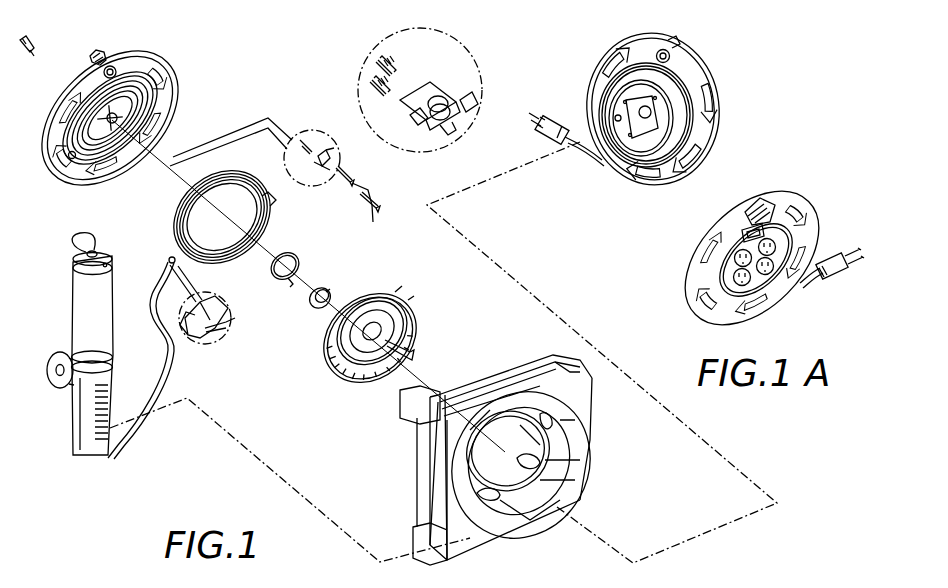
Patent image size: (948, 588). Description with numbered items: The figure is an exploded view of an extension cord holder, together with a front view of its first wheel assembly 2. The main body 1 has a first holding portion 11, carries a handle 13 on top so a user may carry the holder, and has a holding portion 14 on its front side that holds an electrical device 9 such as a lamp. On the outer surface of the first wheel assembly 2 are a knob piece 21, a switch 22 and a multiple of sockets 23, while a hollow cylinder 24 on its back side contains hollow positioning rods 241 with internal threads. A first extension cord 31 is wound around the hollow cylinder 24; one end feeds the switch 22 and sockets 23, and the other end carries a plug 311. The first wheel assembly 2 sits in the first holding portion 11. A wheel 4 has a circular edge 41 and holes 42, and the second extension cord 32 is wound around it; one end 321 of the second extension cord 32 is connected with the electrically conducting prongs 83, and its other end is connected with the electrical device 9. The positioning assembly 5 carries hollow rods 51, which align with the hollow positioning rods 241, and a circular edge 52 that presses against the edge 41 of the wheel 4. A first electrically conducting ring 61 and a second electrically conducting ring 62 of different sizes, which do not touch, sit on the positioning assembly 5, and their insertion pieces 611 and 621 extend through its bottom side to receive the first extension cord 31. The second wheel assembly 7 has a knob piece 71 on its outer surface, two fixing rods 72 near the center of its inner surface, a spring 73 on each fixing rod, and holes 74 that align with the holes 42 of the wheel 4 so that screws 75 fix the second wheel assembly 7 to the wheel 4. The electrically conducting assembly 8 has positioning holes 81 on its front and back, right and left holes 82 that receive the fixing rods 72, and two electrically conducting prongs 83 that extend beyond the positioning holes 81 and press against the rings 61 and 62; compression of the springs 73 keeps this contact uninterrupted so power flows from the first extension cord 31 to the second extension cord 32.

In FIG. 1, the main body 1 is at (484, 364).
In FIG. 1, the first holding portion 11 is at (542, 523).
In FIG. 1, the handle 13 is at (560, 372).
In FIG. 1, the holding portion 14 is at (410, 420).
In FIG. 1, the first wheel assembly 2 is at (602, 45).
In FIG. 1A, the first wheel assembly 2 is at (820, 183).
In FIG. 1, the knob piece 21 is at (676, 44).
In FIG. 1A, the knob piece 21 is at (764, 205).
In FIG. 1A, the switch 22 is at (742, 246).
In FIG. 1A, the sockets 23 is at (770, 282).
In FIG. 1, the hollow cylinder 24 is at (610, 80).
In FIG. 1A, the hollow cylinder 24 is at (722, 236).
In FIG. 1, the hollow positioning rods 241 is at (613, 118).
In FIG. 1, the first extension cord 31 is at (678, 82).
In FIG. 1, the plug 311 is at (530, 110).
In FIG. 1, the second extension cord 32 is at (170, 362).
In FIG. 1, the end of the second extension cord 321 is at (248, 292).
In FIG. 1, the wheel 4 is at (192, 195).
In FIG. 1, the circular edge 41 is at (270, 203).
In FIG. 1, the holes 42 is at (170, 258).
In FIG. 1, the positioning assembly 5 is at (346, 378).
In FIG. 1, the hollow rods 51 is at (412, 338).
In FIG. 1, the circular edge 52 is at (400, 292).
In FIG. 1, the first electrically conducting ring 61 is at (300, 267).
In FIG. 1, the insertion piece 611 is at (290, 284).
In FIG. 1, the second electrically conducting ring 62 is at (318, 308).
In FIG. 1, the insertion piece 621 is at (330, 292).
In FIG. 1, the second wheel assembly 7 is at (178, 72).
In FIG. 1, the knob piece 71 is at (92, 55).
In FIG. 1, the fixing rods 72 is at (113, 117).
In FIG. 1, the springs 73 is at (372, 80).
In FIG. 1, the holes 74 is at (74, 158).
In FIG. 1, the screws 75 is at (82, 72).
In FIG. 1, the electrically conducting assembly 8 is at (400, 110).
In FIG. 1, the positioning holes 81 is at (410, 120).
In FIG. 1, the right and left holes 82 is at (373, 218).
In FIG. 1, the electrically conducting prongs 83 is at (446, 140).
In FIG. 1, the electrical device 9 is at (68, 303).